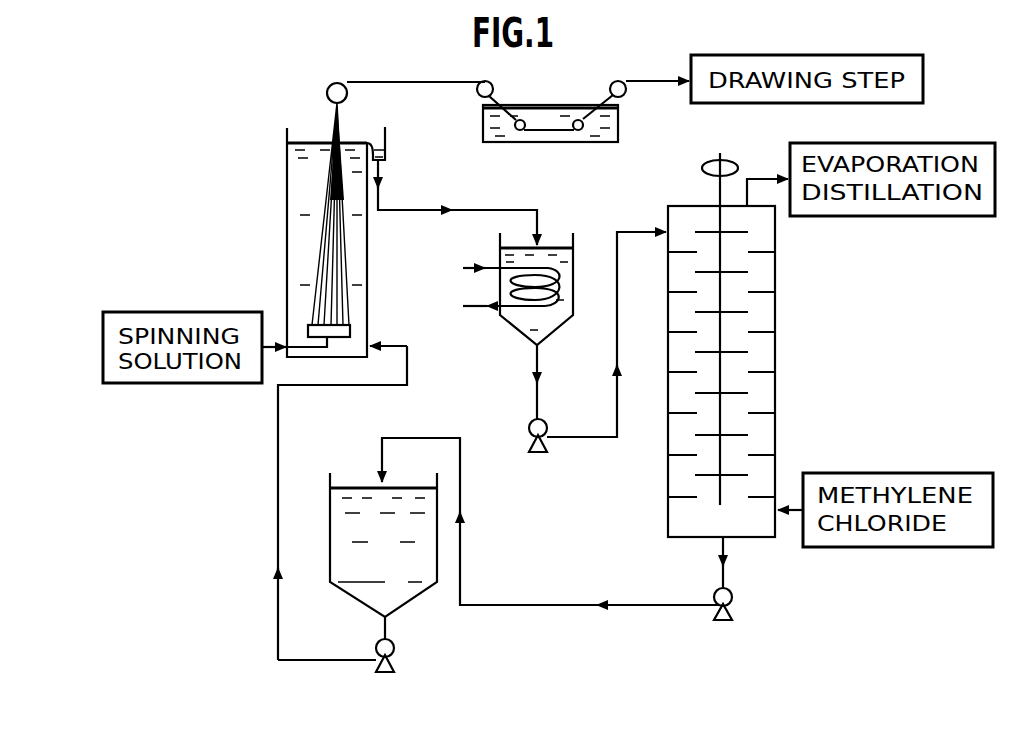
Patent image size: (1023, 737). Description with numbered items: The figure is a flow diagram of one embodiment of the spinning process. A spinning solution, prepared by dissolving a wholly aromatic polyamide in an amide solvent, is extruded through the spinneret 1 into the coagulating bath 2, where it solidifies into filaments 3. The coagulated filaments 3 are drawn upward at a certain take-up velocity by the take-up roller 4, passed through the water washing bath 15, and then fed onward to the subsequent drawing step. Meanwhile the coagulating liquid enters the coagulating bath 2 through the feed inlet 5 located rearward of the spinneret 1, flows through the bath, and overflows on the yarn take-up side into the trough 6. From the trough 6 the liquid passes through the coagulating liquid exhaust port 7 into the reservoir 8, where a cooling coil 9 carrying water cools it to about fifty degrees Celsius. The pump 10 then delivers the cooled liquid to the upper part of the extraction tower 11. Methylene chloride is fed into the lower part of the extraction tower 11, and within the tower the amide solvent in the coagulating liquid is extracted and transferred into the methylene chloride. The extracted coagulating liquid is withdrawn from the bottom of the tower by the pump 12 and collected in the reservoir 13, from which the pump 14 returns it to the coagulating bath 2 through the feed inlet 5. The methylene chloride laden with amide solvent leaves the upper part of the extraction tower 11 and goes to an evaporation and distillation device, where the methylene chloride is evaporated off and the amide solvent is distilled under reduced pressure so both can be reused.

The spinneret 1 is at (352, 326).
The coagulating bath 2 is at (287, 180).
The filaments 3 is at (312, 262).
The take-up roller 4 is at (329, 86).
The feed inlet for the coagulating liquid 5 is at (370, 345).
The trough 6 is at (385, 148).
The coagulating liquid exhaust port 7 is at (377, 168).
The reservoir 8 is at (560, 280).
The cooling coil 9 is at (500, 316).
The pump 10 is at (533, 433).
The extraction tower 11 is at (776, 310).
The pump 12 is at (735, 604).
The reservoir 13 is at (412, 590).
The pump 14 is at (394, 658).
The water washing bath 15 is at (548, 142).